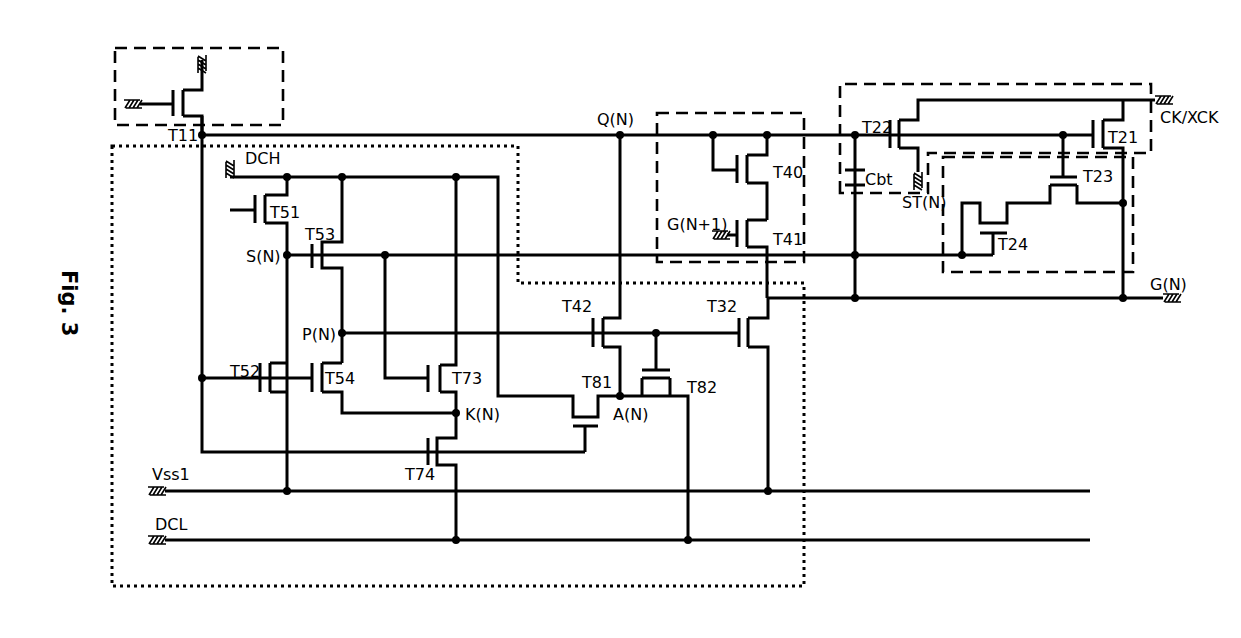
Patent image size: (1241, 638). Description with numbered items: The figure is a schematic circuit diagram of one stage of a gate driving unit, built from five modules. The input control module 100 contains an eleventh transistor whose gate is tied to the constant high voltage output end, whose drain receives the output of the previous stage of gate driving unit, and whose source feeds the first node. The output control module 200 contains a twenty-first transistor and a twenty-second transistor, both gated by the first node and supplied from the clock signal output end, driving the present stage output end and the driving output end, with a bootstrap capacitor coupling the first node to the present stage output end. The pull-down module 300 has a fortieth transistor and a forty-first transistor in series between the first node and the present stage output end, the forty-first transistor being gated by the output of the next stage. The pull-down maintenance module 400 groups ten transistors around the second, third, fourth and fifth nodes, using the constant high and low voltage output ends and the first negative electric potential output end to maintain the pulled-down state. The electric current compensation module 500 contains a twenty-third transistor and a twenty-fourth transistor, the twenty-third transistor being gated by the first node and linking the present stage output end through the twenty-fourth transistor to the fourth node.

The input control module 100 is at (253, 47).
The output control module 200 is at (1115, 84).
The pull-down module 300 is at (682, 113).
The pull-down maintenance module 400 is at (804, 373).
The electric current compensation module 500 is at (1135, 200).